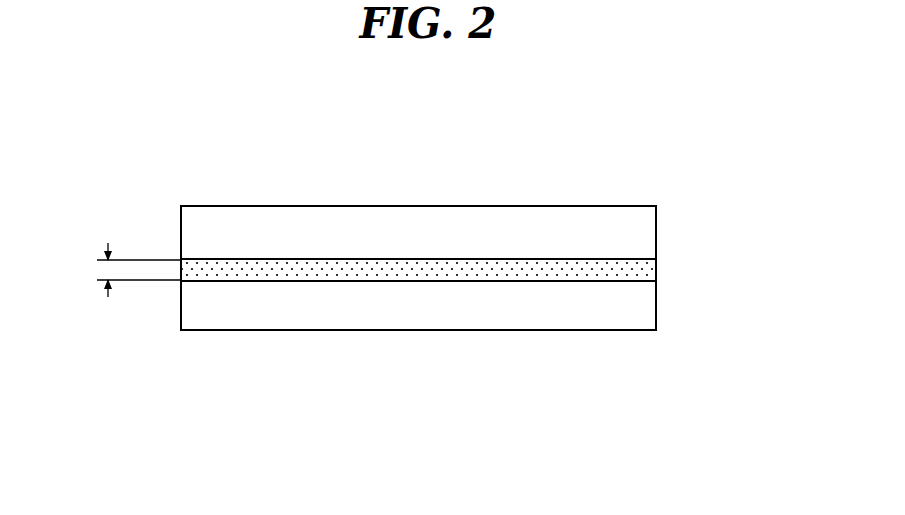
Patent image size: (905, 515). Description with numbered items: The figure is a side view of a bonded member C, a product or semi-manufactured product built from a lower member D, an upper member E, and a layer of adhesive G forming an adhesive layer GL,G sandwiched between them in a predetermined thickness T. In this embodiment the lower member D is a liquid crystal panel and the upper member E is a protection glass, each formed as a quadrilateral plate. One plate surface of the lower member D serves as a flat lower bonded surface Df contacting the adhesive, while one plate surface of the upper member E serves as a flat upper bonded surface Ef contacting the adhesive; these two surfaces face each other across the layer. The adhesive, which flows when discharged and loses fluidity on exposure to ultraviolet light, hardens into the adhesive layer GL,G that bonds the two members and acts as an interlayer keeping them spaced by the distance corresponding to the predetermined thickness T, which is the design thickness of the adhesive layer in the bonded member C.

The bonded member C is at (521, 362).
The upper member E is at (314, 206).
The upper bonded surface Ef is at (397, 261).
The adhesive layer, adhesive GL,G is at (656, 268).
The lower bonded surface Df is at (336, 273).
The lower member D is at (375, 331).
The predetermined thickness T is at (122, 270).